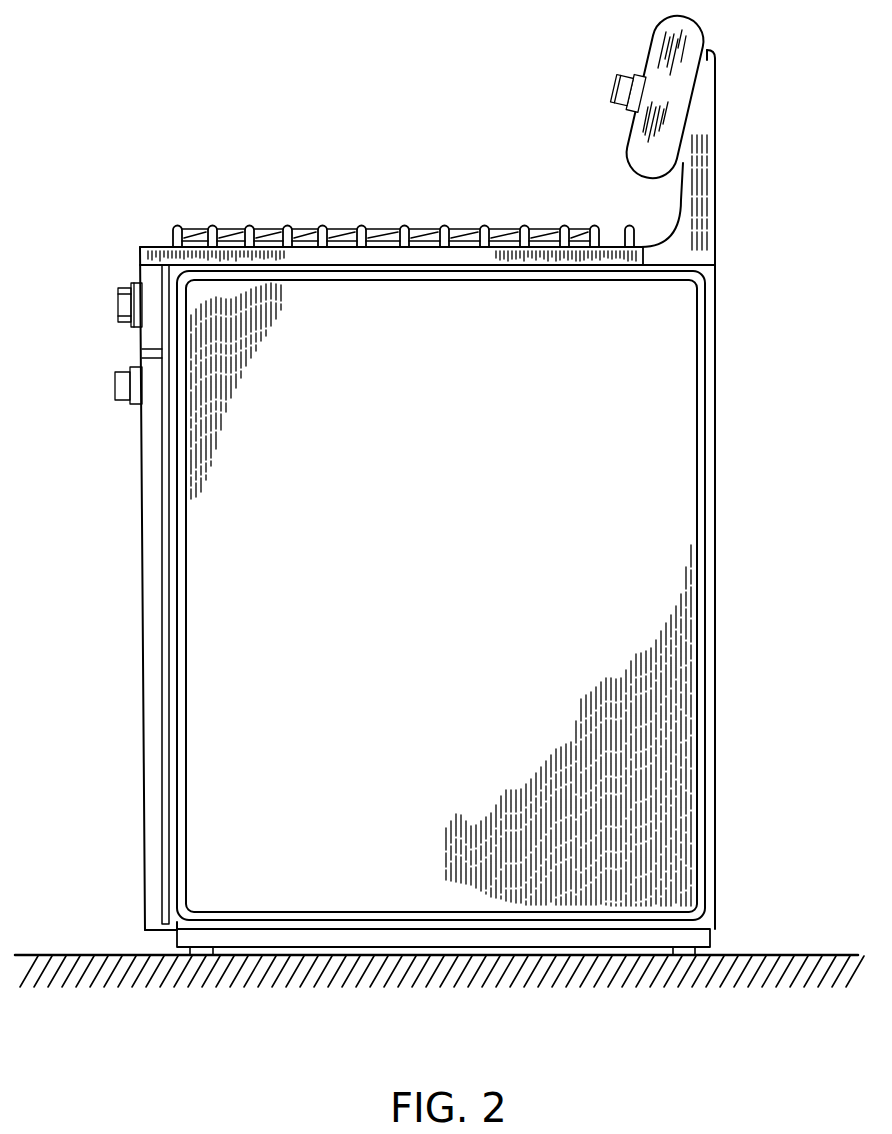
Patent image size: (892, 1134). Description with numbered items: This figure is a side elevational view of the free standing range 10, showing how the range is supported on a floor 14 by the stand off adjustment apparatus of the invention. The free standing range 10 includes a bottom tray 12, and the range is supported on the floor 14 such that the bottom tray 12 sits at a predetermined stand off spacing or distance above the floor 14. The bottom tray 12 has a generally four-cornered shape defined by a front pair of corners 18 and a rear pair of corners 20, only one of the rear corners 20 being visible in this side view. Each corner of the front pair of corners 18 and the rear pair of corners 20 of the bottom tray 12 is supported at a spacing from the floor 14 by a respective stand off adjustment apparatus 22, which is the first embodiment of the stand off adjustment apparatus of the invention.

The free standing range 10 is at (625, 516).
The bottom tray 12 is at (349, 915).
The floor 14 is at (42, 954).
The front pair of corners 18 is at (150, 938).
The rear pair of corners 20 is at (710, 937).
The stand off adjustment apparatus 22 is at (710, 950).